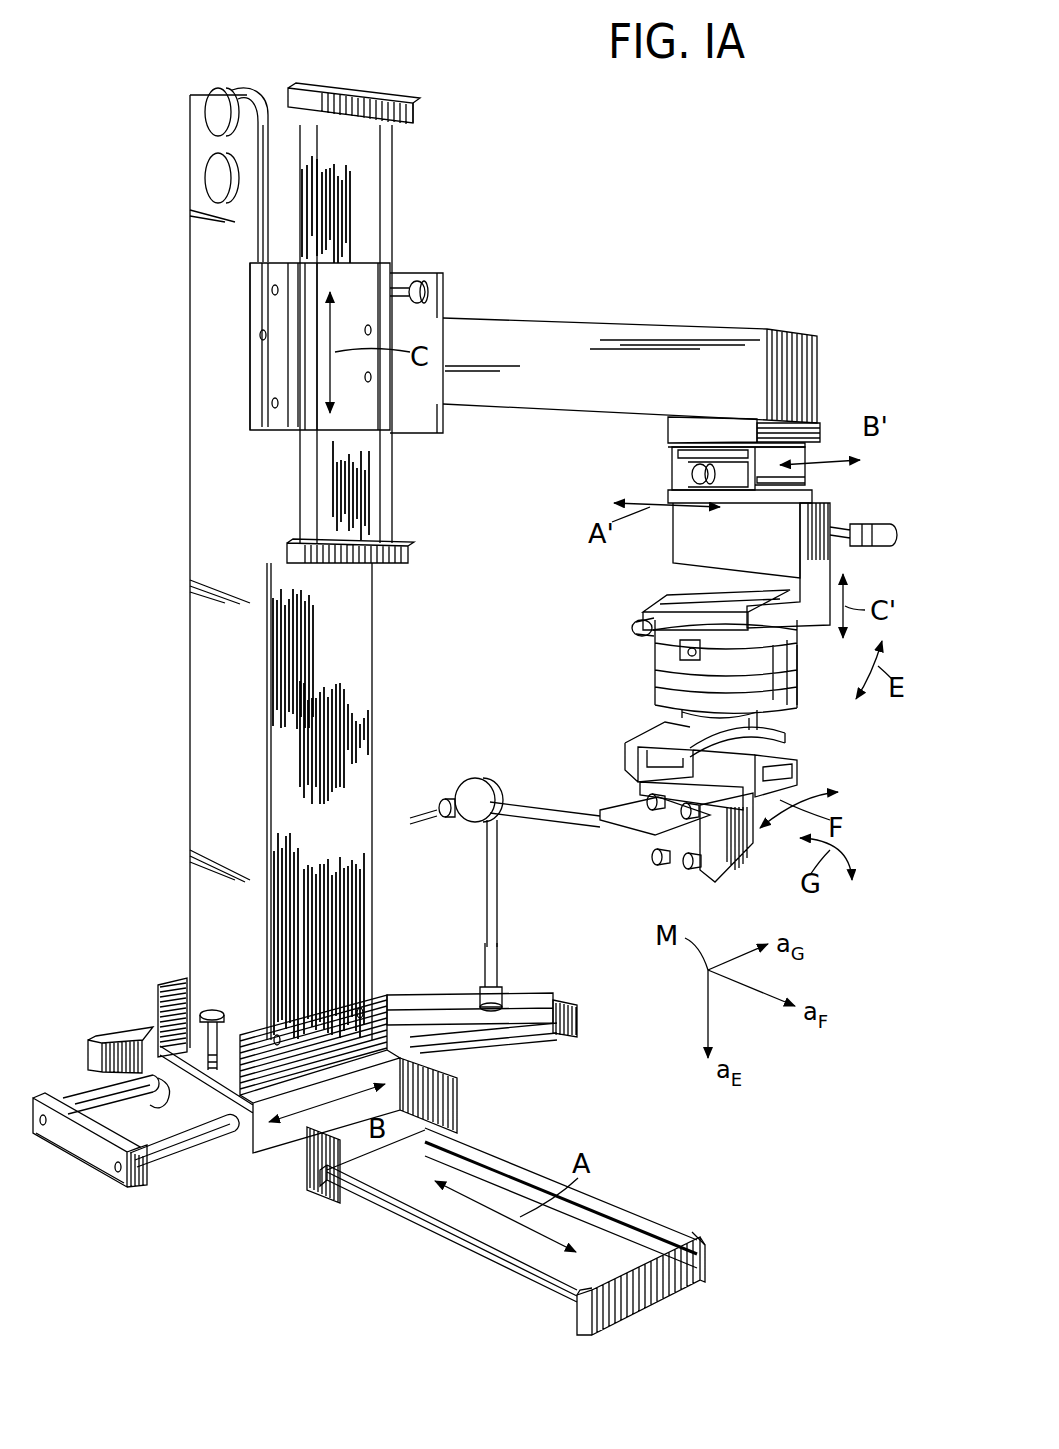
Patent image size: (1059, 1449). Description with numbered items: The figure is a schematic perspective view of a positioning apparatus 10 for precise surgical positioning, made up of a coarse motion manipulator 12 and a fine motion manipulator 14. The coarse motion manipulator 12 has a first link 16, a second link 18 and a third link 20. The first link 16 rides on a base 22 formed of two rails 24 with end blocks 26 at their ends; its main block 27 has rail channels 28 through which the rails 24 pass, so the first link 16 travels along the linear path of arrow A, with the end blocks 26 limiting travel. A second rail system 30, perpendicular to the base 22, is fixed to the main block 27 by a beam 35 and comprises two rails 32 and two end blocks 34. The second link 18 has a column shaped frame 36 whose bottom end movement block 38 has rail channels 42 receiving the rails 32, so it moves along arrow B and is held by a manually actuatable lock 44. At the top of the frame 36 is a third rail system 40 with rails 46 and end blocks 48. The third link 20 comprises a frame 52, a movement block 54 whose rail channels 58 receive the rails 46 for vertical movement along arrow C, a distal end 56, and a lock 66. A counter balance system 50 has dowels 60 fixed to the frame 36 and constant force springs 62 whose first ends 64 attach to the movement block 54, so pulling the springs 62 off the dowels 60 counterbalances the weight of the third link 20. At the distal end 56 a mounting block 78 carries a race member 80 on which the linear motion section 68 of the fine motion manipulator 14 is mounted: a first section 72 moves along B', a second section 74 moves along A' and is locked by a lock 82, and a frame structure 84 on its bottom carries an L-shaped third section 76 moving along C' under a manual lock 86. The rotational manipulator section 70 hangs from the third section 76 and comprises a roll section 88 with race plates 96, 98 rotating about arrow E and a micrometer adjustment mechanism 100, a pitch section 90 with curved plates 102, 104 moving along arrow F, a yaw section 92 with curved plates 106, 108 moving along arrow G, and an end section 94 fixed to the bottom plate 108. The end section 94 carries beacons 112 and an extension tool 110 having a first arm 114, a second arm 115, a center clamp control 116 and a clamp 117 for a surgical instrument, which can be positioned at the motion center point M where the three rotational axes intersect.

The positioning apparatus 10 is at (632, 205).
The coarse motion manipulator 12 is at (215, 784).
The fine motion manipulator 14 is at (660, 605).
The first link 16 is at (464, 1112).
The second link 18 is at (220, 451).
The third link 20 is at (602, 354).
The base 22 is at (705, 1252).
The rails 24 is at (640, 1228).
The end blocks 26 is at (125, 1038).
The main block 27 is at (306, 1192).
The rail channels 28 is at (335, 1168).
The second rail system 30 is at (556, 1000).
The rails 32 is at (78, 1100).
The end blocks 34 is at (580, 1019).
The beam 35 is at (540, 1041).
The column shaped frame 36 is at (190, 608).
The bottom end movement block 38 is at (251, 1152).
The top end third rail system 40 is at (414, 110).
The rail channels 42 is at (182, 1100).
The manually actuatable lock 44 is at (212, 1010).
The rails 46 is at (385, 200).
The end blocks 48 is at (355, 88).
The counter balance system 50 is at (193, 138).
The frame 52 is at (618, 320).
The movement block 54 is at (443, 291).
The distal end 56 is at (770, 331).
The rail channels 58 is at (300, 418).
The dowels 60 is at (205, 108).
The constant force springs 62 is at (248, 95).
The first ends 64 is at (247, 320).
The manually actuatable lock 66 is at (426, 283).
The linear motion section 68 is at (570, 490).
The rotational manipulator section 70 is at (556, 684).
The first section 72 is at (678, 466).
The second section 74 is at (800, 492).
The third section 76 is at (832, 581).
The mounting block 78 is at (670, 432).
The race member 80 is at (790, 438).
The lock 82 is at (692, 477).
The frame structure 84 is at (680, 548).
The manual lock 86 is at (836, 528).
The roll section 88 is at (798, 686).
The pitch section 90 is at (772, 735).
The yaw section 92 is at (645, 752).
The end section 94 is at (720, 881).
The top plate 96 is at (798, 656).
The bottom plate 98 is at (660, 665).
The micrometer adjustment mechanism 100 is at (634, 627).
The top plate 102 is at (690, 735).
The bottom plate 104 is at (650, 771).
The top plate 106 is at (772, 758).
The bottom plate 108 is at (790, 786).
The extension tool 110 is at (470, 780).
The beacons 112 is at (612, 828).
The first arm 114 is at (523, 821).
The second arm 115 is at (487, 861).
The center clamp control 116 is at (438, 806).
The clamp 117 is at (500, 986).